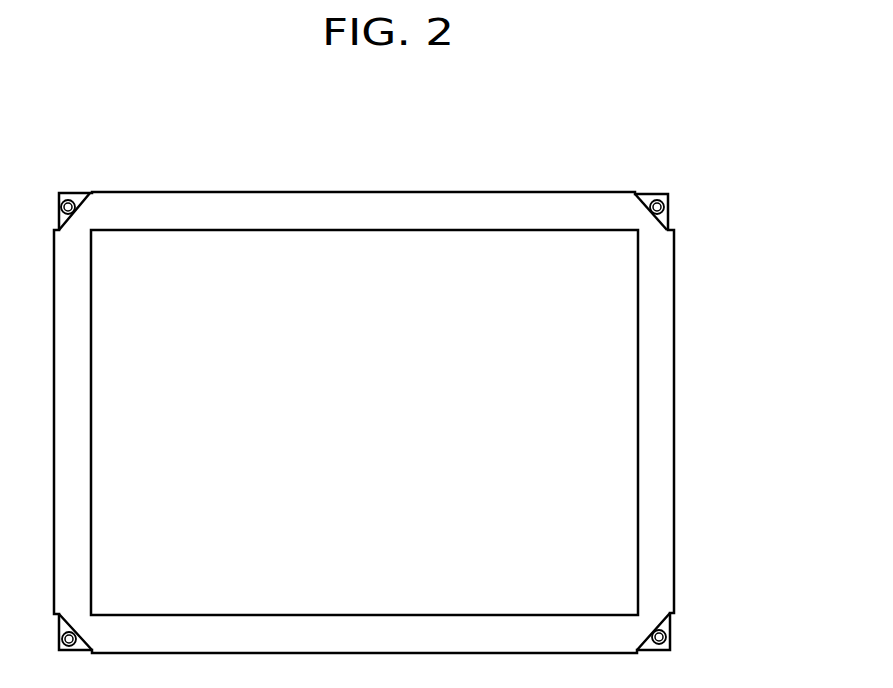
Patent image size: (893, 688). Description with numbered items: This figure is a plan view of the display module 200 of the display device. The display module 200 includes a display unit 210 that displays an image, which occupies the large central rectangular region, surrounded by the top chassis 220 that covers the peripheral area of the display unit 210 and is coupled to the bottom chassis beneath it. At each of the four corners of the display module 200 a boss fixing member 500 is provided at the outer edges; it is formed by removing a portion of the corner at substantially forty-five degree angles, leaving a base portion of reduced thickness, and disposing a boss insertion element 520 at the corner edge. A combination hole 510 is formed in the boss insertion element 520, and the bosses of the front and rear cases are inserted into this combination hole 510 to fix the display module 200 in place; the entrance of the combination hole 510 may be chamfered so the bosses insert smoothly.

The display module 200 is at (188, 160).
The display unit 210 is at (605, 470).
The top chassis 220 is at (662, 412).
The boss fixing member 500 is at (678, 208).
The combination hole 510 is at (655, 199).
The boss insertion element 520 is at (660, 200).